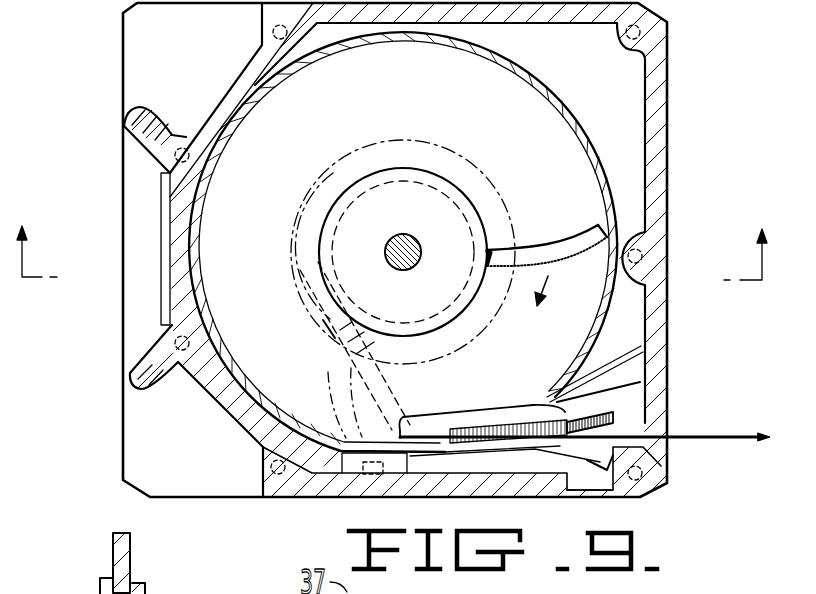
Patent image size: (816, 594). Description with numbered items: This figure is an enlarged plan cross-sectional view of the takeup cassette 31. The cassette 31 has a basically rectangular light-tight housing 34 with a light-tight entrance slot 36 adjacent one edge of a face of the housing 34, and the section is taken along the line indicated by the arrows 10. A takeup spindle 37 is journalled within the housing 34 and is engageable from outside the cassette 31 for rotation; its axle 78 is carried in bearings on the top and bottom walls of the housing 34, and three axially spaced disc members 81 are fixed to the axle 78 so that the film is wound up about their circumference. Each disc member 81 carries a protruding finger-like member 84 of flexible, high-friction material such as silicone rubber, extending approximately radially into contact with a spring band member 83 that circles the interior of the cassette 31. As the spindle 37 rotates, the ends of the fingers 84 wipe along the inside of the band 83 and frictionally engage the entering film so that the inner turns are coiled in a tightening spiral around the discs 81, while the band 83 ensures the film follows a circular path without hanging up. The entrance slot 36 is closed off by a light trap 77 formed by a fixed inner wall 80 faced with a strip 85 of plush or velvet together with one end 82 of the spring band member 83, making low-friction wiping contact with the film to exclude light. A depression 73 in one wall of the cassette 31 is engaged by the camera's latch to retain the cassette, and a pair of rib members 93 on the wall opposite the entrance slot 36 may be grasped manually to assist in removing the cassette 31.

The section line / disc drive assembly 10 is at (392, 230).
The takeup cassette 31 is at (668, 151).
The light-tight housing 34 is at (669, 88).
The entrance slot 36 is at (672, 413).
The takeup spindle 37 is at (387, 169).
The depression 73 is at (604, 493).
The light trap 77 is at (341, 438).
The axle 78 is at (401, 270).
The fixed inner wall 80 is at (456, 415).
The disc members 81 is at (484, 212).
The end of spring band member 82 is at (540, 450).
The spring band member 83 is at (515, 74).
The finger-like member 84 is at (563, 249).
The strip of plush or velvet 85 is at (559, 396).
The rib members 93 is at (125, 116).